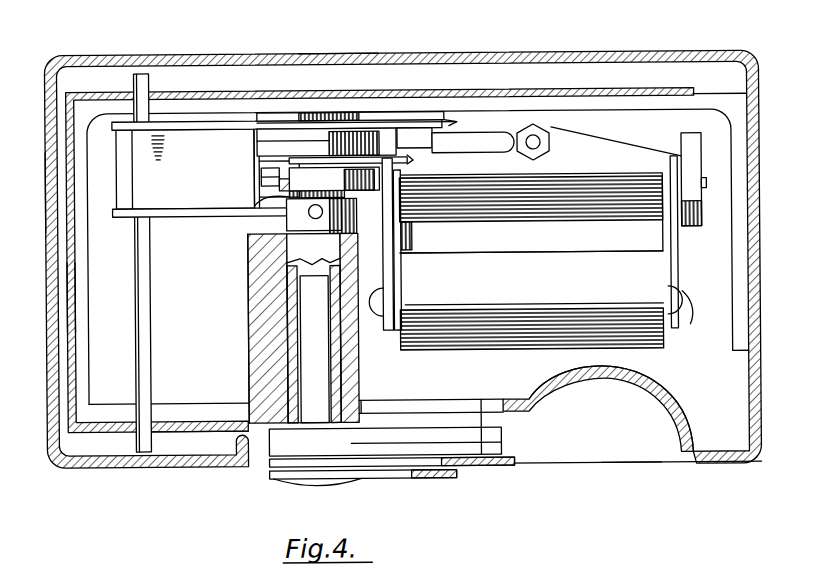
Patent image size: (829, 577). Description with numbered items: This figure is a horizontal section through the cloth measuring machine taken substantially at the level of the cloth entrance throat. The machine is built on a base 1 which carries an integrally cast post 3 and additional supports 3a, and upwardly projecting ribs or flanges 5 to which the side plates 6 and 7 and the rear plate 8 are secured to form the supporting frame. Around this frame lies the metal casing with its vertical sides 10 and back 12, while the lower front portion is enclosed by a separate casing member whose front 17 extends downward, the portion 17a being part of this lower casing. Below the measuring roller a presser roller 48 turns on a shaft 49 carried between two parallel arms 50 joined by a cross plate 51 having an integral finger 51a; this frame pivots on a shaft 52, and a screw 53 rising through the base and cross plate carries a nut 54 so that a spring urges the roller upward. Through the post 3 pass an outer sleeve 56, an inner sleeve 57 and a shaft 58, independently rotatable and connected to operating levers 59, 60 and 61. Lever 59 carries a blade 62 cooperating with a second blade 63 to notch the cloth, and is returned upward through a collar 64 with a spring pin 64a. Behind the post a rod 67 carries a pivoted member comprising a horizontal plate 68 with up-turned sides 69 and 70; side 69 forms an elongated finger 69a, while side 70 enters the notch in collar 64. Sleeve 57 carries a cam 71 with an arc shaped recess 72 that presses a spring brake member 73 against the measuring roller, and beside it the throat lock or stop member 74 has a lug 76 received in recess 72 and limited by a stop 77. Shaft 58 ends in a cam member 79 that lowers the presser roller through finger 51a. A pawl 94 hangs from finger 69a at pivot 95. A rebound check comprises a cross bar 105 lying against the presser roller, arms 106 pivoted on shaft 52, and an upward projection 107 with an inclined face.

The base 1 is at (636, 448).
The post 3 is at (256, 308).
The additional supports 3a is at (268, 142).
The ribs or flanges 5 is at (752, 148).
The side plate 6 is at (178, 434).
The side plate 7 is at (238, 94).
The rear plate 8 is at (77, 300).
The vertical sides of casing 10 is at (330, 58).
The back of casing 12 is at (50, 186).
The front of lower casing member 17 is at (628, 56).
The arched portion of casing 17a is at (624, 378).
The presser roller 48 is at (494, 332).
The shaft 49 is at (697, 316).
The arms 50 is at (678, 271).
The cross plate 51 is at (590, 173).
The finger 51a is at (440, 130).
The shaft 52 is at (600, 183).
The screw 53 is at (540, 128).
The nut 54 is at (540, 140).
The outer sleeve 56 is at (290, 326).
The inner sleeve 57 is at (296, 346).
The shaft 58 is at (300, 286).
The operating lever 59 is at (508, 458).
The operating lever 60 is at (480, 468).
The operating lever 61 is at (406, 480).
The blade 62 is at (500, 430).
The second blade 63 is at (452, 414).
The collar 64 is at (356, 228).
The pin 64a is at (316, 219).
The rod 67 is at (140, 355).
The horizontal plate 68 is at (200, 184).
The up-turned side 69 is at (226, 122).
The elongated finger 69a is at (452, 124).
The up-turned side 70 is at (232, 210).
The cam 71 is at (382, 192).
The arc shaped recess 72 is at (255, 205).
The spring brake member 73 is at (346, 178).
The throat lock or stop member 74 is at (414, 161).
The lug 76 is at (270, 171).
The stop 77 is at (268, 184).
The cam member 79 is at (314, 115).
The pawl 94 is at (394, 126).
The pivot 95 is at (368, 112).
The cross bar 105 is at (514, 258).
The arms 106 is at (402, 232).
The upward projection 107 is at (400, 182).